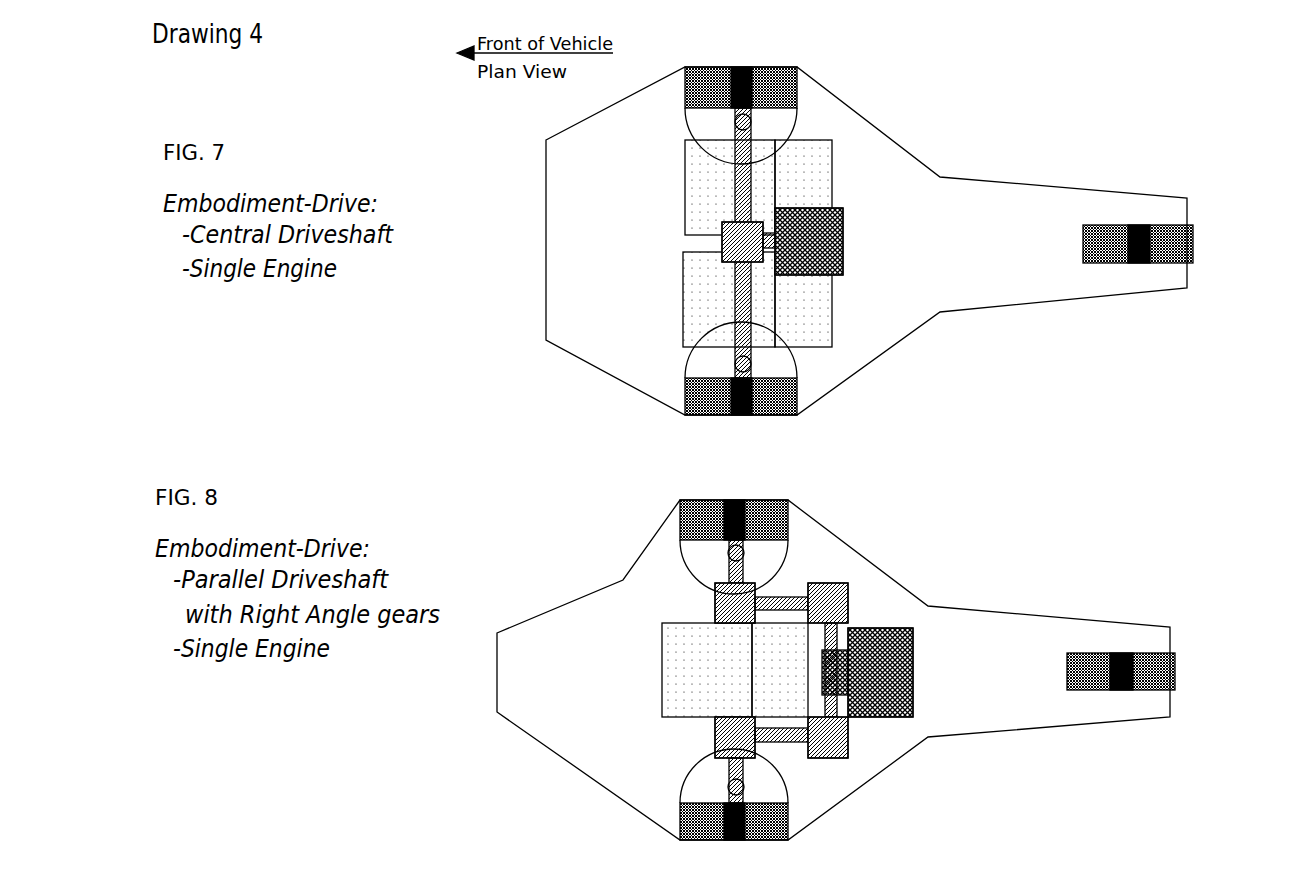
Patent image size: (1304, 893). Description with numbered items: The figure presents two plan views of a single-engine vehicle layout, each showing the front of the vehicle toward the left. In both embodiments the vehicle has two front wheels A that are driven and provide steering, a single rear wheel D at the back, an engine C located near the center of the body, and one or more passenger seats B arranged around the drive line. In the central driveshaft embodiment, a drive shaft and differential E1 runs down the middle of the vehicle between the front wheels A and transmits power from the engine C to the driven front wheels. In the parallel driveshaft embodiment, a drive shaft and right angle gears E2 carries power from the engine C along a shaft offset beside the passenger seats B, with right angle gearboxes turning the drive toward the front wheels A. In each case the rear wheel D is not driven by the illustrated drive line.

In FIG. 7, the front wheels A is at (800, 85).
In FIG. 8, the front wheels A is at (790, 510).
In FIG. 7, the drive shaft and differential E1 is at (765, 222).
In FIG. 8, the drive shaft and right angle gears E2 is at (760, 585).
In FIG. 7, the engine C is at (843, 215).
In FIG. 8, the engine C is at (880, 628).
In FIG. 7, the passenger seats B is at (832, 310).
In FIG. 8, the passenger seats B is at (850, 735).
In FIG. 7, the rear wheel D is at (1115, 225).
In FIG. 8, the rear wheel D is at (1100, 653).